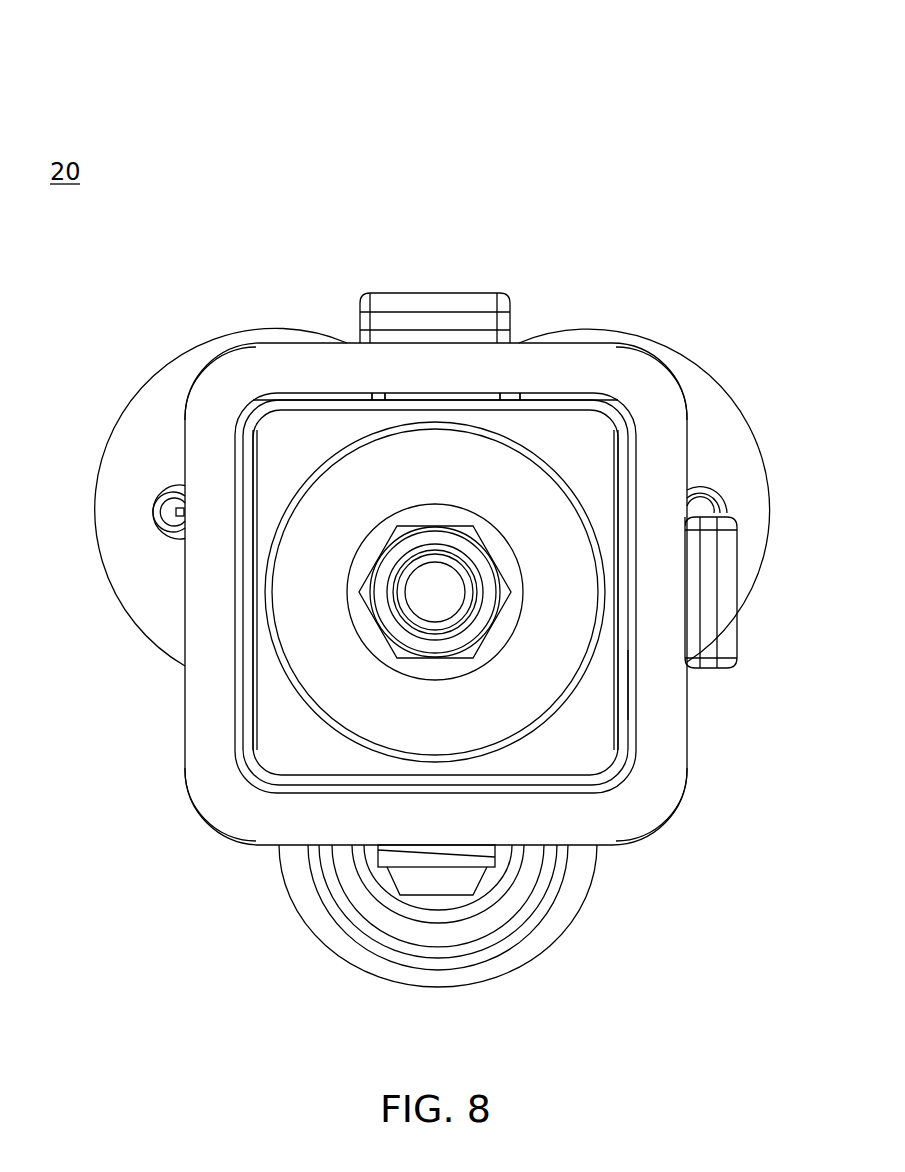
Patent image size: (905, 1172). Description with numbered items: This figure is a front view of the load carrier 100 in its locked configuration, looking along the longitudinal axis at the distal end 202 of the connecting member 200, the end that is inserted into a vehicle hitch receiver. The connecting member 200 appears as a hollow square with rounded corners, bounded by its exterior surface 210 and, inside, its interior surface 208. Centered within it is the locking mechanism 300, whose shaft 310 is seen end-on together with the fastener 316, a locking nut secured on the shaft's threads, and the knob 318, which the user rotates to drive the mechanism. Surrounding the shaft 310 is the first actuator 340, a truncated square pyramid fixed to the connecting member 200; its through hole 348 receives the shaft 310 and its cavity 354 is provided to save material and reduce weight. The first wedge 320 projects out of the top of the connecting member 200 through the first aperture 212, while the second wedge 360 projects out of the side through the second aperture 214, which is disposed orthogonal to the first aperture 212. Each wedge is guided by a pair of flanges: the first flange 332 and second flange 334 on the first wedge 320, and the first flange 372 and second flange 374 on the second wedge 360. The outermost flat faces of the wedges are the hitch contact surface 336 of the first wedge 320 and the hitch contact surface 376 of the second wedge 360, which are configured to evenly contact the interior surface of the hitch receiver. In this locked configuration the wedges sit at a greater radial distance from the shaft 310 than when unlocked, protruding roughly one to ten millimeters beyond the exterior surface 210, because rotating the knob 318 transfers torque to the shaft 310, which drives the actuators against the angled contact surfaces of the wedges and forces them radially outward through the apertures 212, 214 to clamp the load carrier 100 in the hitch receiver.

The load carrier 100 is at (686, 76).
The connecting member 200 is at (377, 612).
The distal end 202 is at (226, 812).
The interior surface 208 is at (243, 437).
The exterior surface 210 is at (672, 800).
The first aperture 212 is at (348, 338).
The second aperture 214 is at (702, 506).
The locking mechanism 300 is at (316, 360).
The shaft 310 is at (440, 616).
The fastener 316 is at (502, 592).
The knob 318 is at (732, 394).
The first wedge 320 is at (435, 249).
The first flange 332 is at (508, 402).
The second flange 334 is at (352, 402).
The hitch contact surface 336 is at (461, 293).
The first actuator 340 is at (590, 438).
The through hole 348 is at (392, 556).
The cavity 354 is at (542, 688).
The second wedge 360 is at (793, 600).
The first flange 372 is at (645, 508).
The second flange 374 is at (632, 672).
The hitch contact surface 376 is at (740, 604).